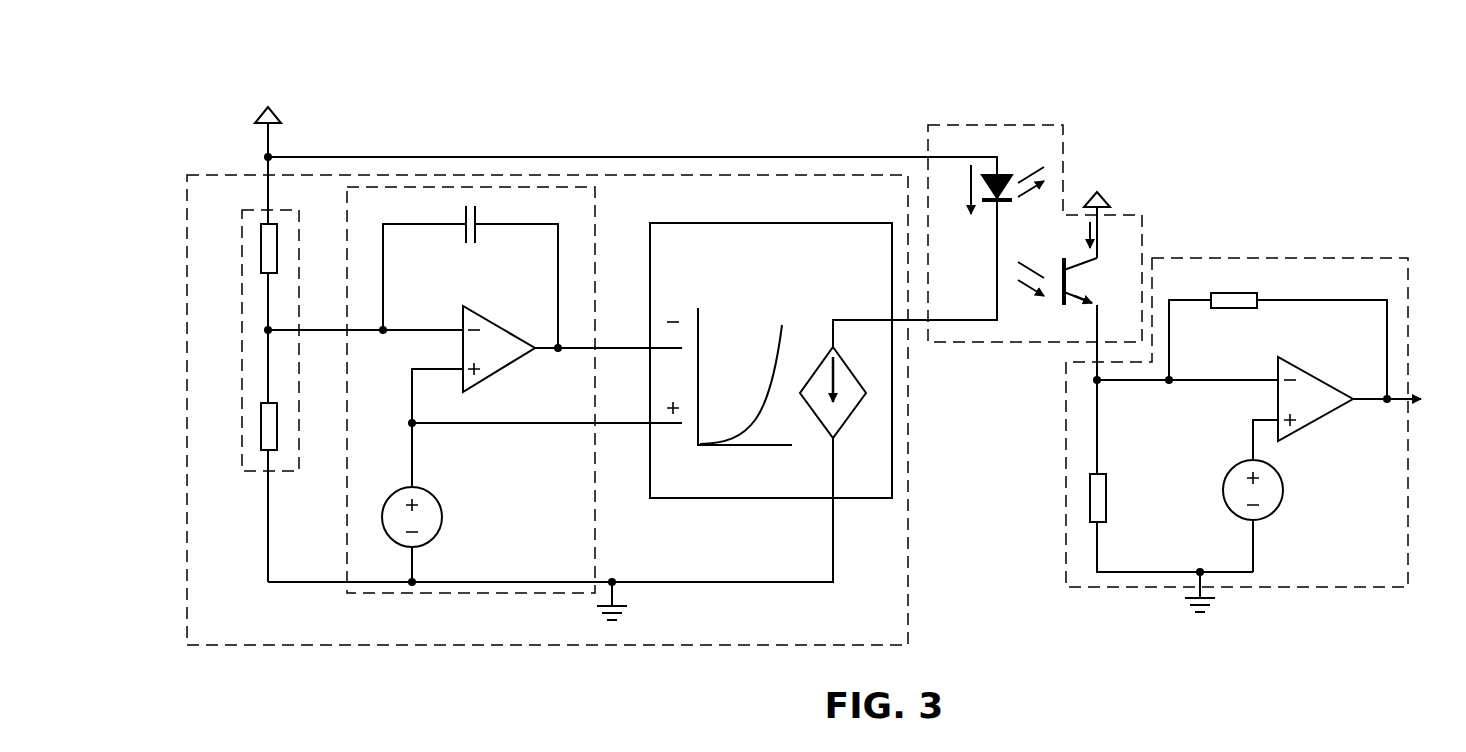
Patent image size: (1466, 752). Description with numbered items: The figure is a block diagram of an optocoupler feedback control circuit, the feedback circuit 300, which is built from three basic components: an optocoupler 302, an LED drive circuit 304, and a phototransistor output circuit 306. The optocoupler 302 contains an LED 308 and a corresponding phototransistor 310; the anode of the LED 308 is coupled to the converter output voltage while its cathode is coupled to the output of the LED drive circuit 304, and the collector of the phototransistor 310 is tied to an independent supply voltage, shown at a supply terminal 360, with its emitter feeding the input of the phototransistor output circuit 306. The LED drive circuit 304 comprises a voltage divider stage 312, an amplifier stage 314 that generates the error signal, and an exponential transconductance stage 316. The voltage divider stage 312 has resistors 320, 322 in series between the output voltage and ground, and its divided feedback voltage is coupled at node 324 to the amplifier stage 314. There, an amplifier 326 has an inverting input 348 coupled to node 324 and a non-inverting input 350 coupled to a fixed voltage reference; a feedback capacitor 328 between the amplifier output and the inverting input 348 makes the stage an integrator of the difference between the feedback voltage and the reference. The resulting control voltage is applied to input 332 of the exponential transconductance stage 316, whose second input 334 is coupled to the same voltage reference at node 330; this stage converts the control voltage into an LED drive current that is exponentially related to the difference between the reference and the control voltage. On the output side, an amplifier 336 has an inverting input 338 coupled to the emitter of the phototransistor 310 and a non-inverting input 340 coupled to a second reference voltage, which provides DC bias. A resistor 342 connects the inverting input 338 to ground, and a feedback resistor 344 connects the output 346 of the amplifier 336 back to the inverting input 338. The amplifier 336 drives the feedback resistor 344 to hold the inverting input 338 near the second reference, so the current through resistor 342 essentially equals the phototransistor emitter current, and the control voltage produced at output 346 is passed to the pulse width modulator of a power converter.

The feedback circuit 300 is at (478, 45).
The optocoupler 302 is at (982, 125).
The LED drive circuit 304 is at (517, 175).
The phototransistor output circuit 306 is at (1325, 258).
The LED 308 is at (1007, 175).
The phototransistor 310 is at (1065, 300).
The voltage divider stage 312 is at (260, 473).
The amplifier stage 314 is at (595, 515).
The exponential transconductance stage 316 is at (733, 223).
The resistor 320 is at (261, 241).
The resistor 322 is at (261, 412).
The node 324 is at (268, 331).
The amplifier 326 is at (517, 332).
The feedback capacitor 328 is at (478, 226).
The node 330 is at (410, 427).
The input 332 is at (650, 347).
The second input 334 is at (650, 423).
The amplifier 336 is at (1317, 422).
The inverting input 338 is at (1278, 378).
The non-inverting input 340 is at (1278, 418).
The resistor 342 is at (1089, 501).
The feedback resistor 344 is at (1225, 292).
The output 346 is at (1385, 403).
The inverting input 348 is at (462, 330).
The non-inverting input 350 is at (462, 372).
The supply voltage terminal 360 is at (1110, 197).